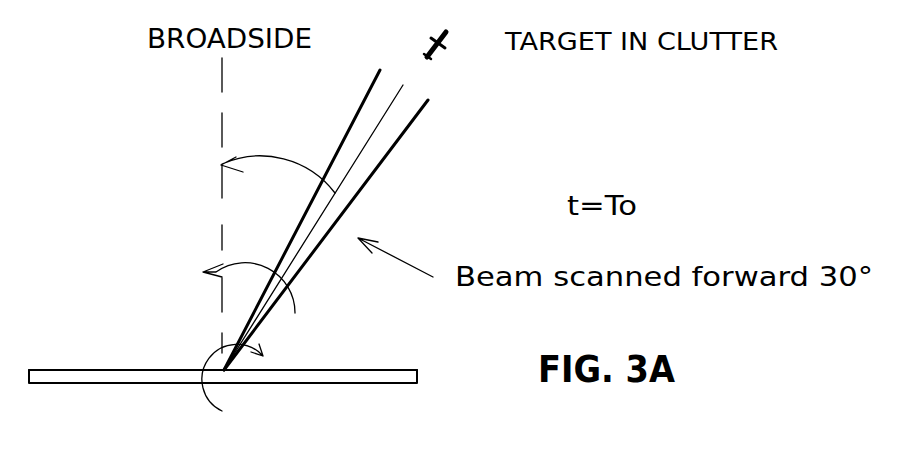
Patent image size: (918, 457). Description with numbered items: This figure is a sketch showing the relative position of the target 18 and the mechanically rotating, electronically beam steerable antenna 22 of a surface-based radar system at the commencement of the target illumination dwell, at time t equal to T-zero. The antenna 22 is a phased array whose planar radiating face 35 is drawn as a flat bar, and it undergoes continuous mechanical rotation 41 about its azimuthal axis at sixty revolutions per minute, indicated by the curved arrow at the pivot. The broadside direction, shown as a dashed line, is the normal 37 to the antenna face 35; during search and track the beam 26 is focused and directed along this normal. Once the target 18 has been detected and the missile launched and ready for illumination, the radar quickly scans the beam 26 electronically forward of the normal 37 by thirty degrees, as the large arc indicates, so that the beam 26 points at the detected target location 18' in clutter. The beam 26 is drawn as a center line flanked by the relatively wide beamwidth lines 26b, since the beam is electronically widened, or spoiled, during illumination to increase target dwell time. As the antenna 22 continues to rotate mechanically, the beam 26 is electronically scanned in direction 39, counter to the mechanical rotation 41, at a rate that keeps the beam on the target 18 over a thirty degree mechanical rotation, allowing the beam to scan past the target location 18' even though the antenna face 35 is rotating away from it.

The target 18 is at (459, 57).
The target location 18' is at (569, 94).
The search antenna system 22 is at (377, 383).
The electronically steerable beam 26 is at (355, 163).
The relatively wide beamwidth lines 26b is at (357, 115).
The antenna face 35 is at (363, 370).
The normal 37 is at (220, 198).
The electronic scan direction 39 is at (290, 297).
The mechanical rotation 41 is at (210, 358).